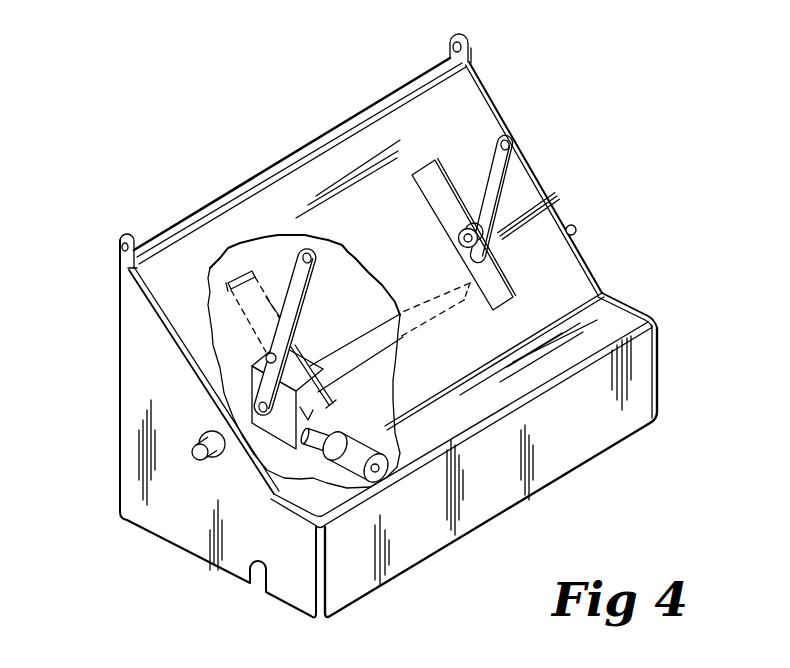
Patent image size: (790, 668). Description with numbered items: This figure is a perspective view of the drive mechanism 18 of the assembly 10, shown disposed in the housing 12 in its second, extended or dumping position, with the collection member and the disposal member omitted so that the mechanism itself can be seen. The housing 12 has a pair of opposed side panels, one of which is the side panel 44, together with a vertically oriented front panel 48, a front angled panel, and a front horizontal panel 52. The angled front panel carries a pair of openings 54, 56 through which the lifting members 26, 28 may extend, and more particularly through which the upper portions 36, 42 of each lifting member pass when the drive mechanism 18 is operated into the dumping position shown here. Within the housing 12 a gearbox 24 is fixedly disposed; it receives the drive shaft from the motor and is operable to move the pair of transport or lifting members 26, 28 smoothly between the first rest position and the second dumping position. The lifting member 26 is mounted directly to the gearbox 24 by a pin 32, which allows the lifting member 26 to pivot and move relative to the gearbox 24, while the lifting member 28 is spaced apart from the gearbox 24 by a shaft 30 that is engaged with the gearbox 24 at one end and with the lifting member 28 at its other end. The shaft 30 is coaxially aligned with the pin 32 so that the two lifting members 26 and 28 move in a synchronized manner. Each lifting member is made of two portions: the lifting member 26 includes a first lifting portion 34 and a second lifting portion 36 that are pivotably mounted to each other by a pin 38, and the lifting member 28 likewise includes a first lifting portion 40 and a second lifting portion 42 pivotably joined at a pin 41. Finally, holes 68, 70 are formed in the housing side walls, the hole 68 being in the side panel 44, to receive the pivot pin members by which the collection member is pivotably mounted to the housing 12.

The assembly 10 is at (337, 73).
The housing 12 is at (645, 380).
The drive mechanism 18 is at (228, 325).
The gearbox 24 is at (278, 436).
The lifting member 26 is at (292, 280).
The lifting member 28 is at (473, 160).
The shaft 30 is at (360, 347).
The pin 32 is at (255, 408).
The first lifting portion 34 is at (255, 386).
The second lifting portion 36 is at (288, 262).
The pin 38 is at (255, 360).
The first lifting portion 40 is at (485, 244).
The pin 41 is at (523, 222).
The second lifting portion 42 is at (490, 192).
The side panel 44 is at (137, 503).
The front panel 48 is at (645, 407).
The front horizontal panel 52 is at (620, 313).
The opening 54 is at (213, 265).
The opening 56 is at (418, 168).
The hole 68 is at (118, 247).
The hole 70 is at (458, 35).